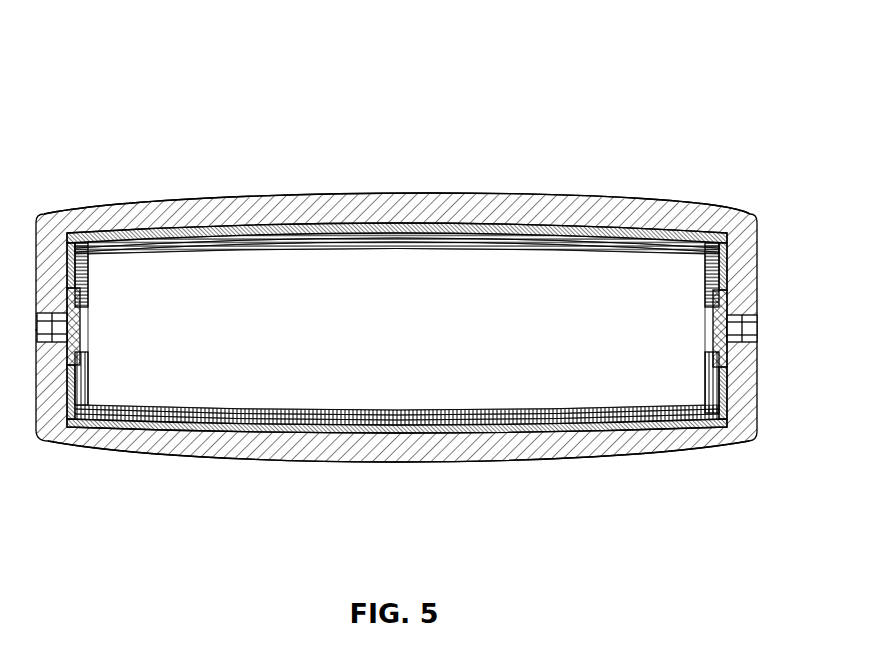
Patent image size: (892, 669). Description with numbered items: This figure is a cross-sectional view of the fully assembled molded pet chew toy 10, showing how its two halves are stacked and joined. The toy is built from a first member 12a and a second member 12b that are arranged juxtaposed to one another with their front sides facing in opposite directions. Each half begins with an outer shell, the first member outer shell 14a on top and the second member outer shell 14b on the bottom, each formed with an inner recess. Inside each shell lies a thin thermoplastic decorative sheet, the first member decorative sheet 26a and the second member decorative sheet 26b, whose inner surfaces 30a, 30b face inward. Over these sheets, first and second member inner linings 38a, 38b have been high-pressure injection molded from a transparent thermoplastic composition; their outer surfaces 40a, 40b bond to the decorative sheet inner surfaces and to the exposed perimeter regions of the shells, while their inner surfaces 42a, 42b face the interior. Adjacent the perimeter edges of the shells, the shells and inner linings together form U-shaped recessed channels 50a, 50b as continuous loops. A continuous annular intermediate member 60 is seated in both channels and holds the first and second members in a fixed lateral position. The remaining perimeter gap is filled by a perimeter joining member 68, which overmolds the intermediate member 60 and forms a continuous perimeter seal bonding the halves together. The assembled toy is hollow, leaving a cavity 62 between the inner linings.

The molded pet chew toy 10 is at (396, 302).
The first member 12a is at (396, 186).
The second member 12b is at (396, 460).
The first member outer shell 14a is at (287, 210).
The second member outer shell 14b is at (246, 450).
The first member decorative sheet 26a is at (568, 227).
The second member decorative sheet 26b is at (526, 432).
The inner surface of first member decorative sheet 30a is at (397, 230).
The inner surface of second member decorative sheet 30b is at (397, 430).
The first member inner lining 38a is at (497, 237).
The second member inner lining 38b is at (300, 420).
The outer surface of first member inner lining 40a is at (378, 222).
The outer surface of second member inner lining 40b is at (372, 410).
The inner surface of first member inner lining 42a is at (288, 248).
The inner surface of second member inner lining 42b is at (492, 410).
The first member U-shaped recessed channel 50a is at (104, 302).
The second member U-shaped recessed channel 50b is at (108, 355).
The intermediate member 60 is at (98, 325).
The cavity 62 is at (448, 332).
The perimeter joining member 68 is at (757, 330).